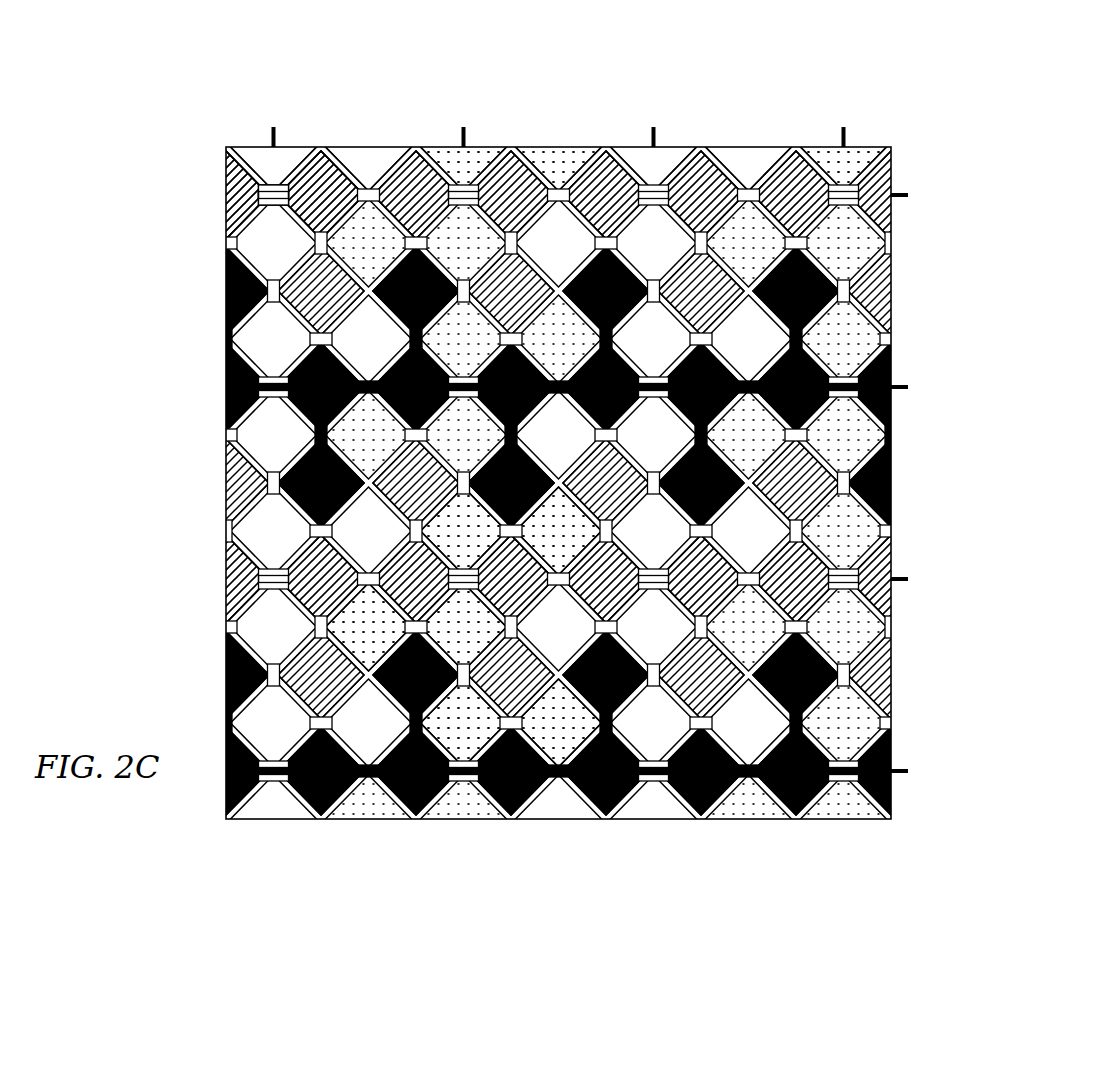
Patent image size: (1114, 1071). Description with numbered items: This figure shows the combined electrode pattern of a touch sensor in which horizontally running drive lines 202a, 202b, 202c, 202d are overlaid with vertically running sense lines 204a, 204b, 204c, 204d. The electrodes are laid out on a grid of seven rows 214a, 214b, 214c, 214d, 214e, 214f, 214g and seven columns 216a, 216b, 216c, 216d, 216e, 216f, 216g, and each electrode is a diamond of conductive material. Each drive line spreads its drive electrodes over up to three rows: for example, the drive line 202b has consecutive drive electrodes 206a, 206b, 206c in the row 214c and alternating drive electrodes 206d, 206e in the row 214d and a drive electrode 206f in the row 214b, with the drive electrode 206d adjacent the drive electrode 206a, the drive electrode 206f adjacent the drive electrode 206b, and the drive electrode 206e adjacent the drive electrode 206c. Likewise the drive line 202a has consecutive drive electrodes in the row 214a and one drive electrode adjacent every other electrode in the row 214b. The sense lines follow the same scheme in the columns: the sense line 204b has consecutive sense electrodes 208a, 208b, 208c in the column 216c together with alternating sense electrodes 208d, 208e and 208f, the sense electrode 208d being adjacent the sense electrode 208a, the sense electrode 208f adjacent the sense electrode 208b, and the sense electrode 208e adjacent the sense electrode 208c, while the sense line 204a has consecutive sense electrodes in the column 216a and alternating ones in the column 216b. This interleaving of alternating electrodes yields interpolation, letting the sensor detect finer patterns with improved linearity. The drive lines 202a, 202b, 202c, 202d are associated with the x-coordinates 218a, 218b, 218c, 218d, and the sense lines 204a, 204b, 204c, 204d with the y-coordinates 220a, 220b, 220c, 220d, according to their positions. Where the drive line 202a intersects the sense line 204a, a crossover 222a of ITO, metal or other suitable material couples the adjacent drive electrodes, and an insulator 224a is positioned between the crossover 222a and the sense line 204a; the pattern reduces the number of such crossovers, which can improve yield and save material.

The drive line 202a is at (903, 192).
The drive line 202b is at (903, 384).
The drive line 202c is at (903, 576).
The drive line 202d is at (903, 768).
The sense line 204a is at (271, 141).
The sense line 204b is at (459, 143).
The sense line 204c is at (649, 143).
The sense line 204d is at (839, 143).
The drive electrode 206a is at (228, 195).
The drive electrode 206b is at (310, 213).
The drive electrode 206c is at (495, 400).
The drive electrode 206d is at (303, 492).
The drive electrode 206e is at (492, 495).
The drive electrode 206f is at (388, 287).
The sense electrode 208a is at (448, 545).
The sense electrode 208b is at (448, 637).
The sense electrode 208c is at (480, 733).
The sense electrode 208d is at (545, 543).
The sense electrode 208e is at (573, 735).
The sense electrode 208f is at (355, 635).
The row 214a is at (616, 195).
The row 214b is at (617, 291).
The row 214c is at (616, 387).
The row 214d is at (617, 483).
The row 214e is at (617, 579).
The row 214f is at (614, 675).
The row 214g is at (617, 771).
The column 216a is at (274, 116).
The column 216b is at (369, 116).
The column 216c is at (464, 116).
The column 216d is at (559, 116).
The column 216e is at (654, 116).
The column 216f is at (749, 116).
The column 216g is at (844, 116).
The x-coordinate 218a is at (928, 207).
The x-coordinate 218b is at (928, 399).
The x-coordinate 218c is at (928, 591).
The x-coordinate 218d is at (928, 783).
The y-coordinate 220a is at (287, 113).
The y-coordinate 220b is at (477, 113).
The y-coordinate 220c is at (667, 113).
The y-coordinate 220d is at (857, 113).
The crossover 222a is at (260, 185).
The insulator 224a is at (260, 204).